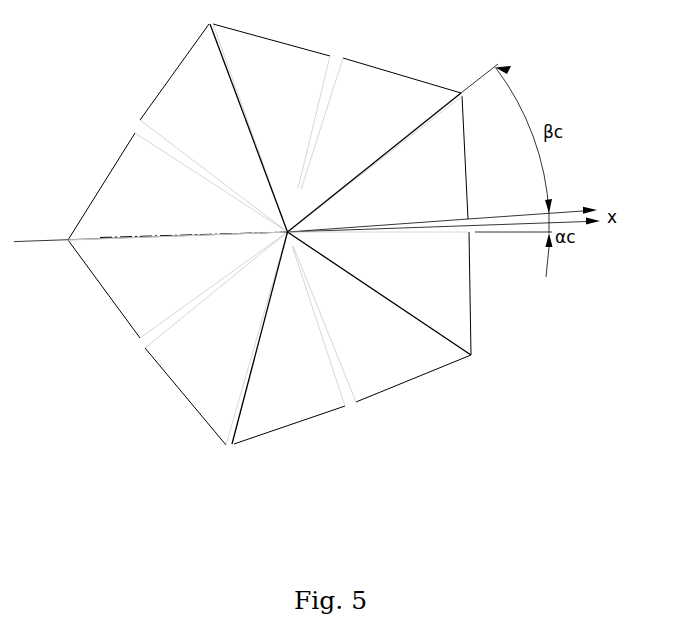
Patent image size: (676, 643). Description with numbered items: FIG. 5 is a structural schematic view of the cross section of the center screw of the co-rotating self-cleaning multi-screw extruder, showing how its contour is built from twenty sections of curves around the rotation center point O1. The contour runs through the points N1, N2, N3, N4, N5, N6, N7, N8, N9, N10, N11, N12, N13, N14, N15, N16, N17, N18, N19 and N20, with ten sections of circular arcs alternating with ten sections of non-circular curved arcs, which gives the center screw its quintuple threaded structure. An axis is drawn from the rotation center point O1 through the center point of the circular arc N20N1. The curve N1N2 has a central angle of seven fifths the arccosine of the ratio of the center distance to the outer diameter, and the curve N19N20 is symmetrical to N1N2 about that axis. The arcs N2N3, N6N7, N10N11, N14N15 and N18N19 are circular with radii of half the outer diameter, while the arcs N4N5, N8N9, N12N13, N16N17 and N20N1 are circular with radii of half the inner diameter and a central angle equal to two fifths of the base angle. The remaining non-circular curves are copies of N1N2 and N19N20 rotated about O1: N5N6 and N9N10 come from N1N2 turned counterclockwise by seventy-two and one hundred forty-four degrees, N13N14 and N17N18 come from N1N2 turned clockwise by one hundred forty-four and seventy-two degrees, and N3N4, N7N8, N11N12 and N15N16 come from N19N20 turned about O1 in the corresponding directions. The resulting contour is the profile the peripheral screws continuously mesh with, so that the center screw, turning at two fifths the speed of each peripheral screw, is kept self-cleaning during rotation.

The contour point N1 is at (391, 214).
The contour point N2 is at (387, 164).
The contour point N3 is at (380, 149).
The contour point N4 is at (337, 115).
The contour point N5 is at (315, 108).
The contour point N6 is at (250, 119).
The contour point N7 is at (236, 122).
The contour point N8 is at (207, 166).
The contour point N9 is at (197, 178).
The contour point N10 is at (167, 227).
The contour point N11 is at (168, 249).
The contour point N12 is at (198, 291).
The contour point N13 is at (209, 305).
The contour point N14 is at (242, 344).
The contour point N15 is at (260, 348).
The contour point N16 is at (324, 341).
The contour point N17 is at (342, 334).
The contour point N18 is at (389, 308).
The contour point N19 is at (399, 295).
The contour point N20 is at (397, 244).
The rotation center point O1 is at (299, 222).